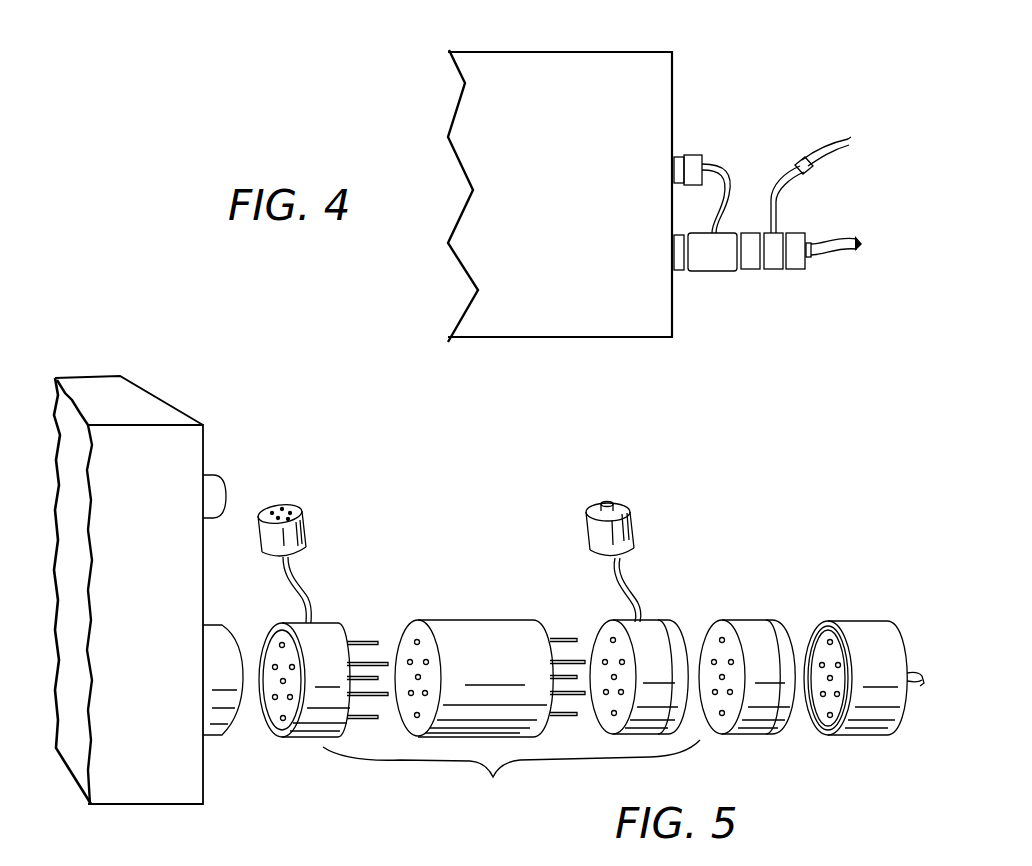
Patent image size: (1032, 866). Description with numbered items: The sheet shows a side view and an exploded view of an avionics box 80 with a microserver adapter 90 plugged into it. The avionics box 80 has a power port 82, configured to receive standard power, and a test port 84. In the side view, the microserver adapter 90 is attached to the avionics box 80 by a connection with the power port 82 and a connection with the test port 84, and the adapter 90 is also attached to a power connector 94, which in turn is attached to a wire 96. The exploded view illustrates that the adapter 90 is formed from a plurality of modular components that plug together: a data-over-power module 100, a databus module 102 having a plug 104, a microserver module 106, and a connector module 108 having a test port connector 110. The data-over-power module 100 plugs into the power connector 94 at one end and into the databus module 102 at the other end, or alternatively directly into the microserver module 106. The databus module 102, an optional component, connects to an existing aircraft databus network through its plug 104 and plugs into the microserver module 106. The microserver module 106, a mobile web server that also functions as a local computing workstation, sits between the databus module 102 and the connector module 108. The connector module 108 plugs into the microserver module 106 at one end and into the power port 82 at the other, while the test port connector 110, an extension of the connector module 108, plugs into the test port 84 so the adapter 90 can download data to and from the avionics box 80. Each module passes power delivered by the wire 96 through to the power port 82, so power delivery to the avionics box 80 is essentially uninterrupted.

In FIG. 4, the avionics box 80 is at (733, 78).
In FIG. 5, the avionics box 80 is at (233, 782).
In FIG. 4, the power port 82 is at (681, 268).
In FIG. 5, the power port 82 is at (218, 652).
In FIG. 4, the test port 84 is at (677, 157).
In FIG. 5, the test port 84 is at (226, 486).
In FIG. 4, the microserver adapter 90 is at (777, 244).
In FIG. 5, the microserver adapter 90 is at (511, 773).
In FIG. 4, the power connector 94 is at (798, 237).
In FIG. 5, the power connector 94 is at (863, 633).
In FIG. 4, the wire 96 is at (826, 240).
In FIG. 5, the wire 96 is at (923, 670).
In FIG. 5, the data-over-power module 100 is at (743, 628).
In FIG. 5, the databus module 102 is at (652, 627).
In FIG. 5, the plug 104 is at (625, 533).
In FIG. 5, the microserver module 106 is at (483, 642).
In FIG. 5, the connector module 108 is at (333, 635).
In FIG. 5, the test port connector 110 is at (303, 532).